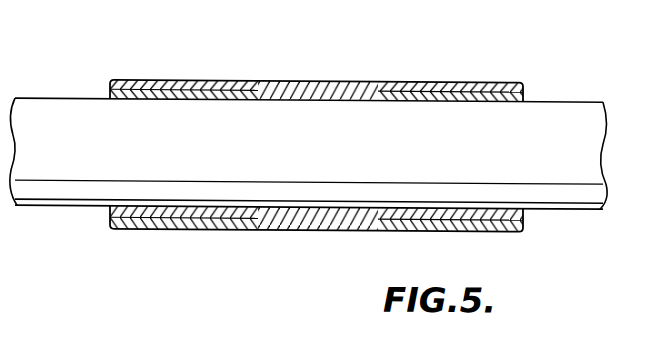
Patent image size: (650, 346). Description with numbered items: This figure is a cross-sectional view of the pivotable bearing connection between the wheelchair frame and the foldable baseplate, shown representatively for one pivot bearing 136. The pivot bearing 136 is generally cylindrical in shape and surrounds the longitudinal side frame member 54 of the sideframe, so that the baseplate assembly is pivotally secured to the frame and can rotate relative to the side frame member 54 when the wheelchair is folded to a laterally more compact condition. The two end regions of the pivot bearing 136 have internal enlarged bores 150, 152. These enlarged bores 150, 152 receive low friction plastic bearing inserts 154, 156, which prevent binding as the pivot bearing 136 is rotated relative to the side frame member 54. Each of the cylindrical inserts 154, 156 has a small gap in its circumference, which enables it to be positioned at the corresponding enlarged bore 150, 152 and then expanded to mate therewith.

The longitudinal side frame member 54 is at (547, 97).
The pivot bearing 136 is at (290, 43).
The enlarged bore 150 is at (160, 79).
The enlarged bore 152 is at (423, 79).
The bearing insert 154 is at (172, 217).
The bearing insert 156 is at (423, 222).